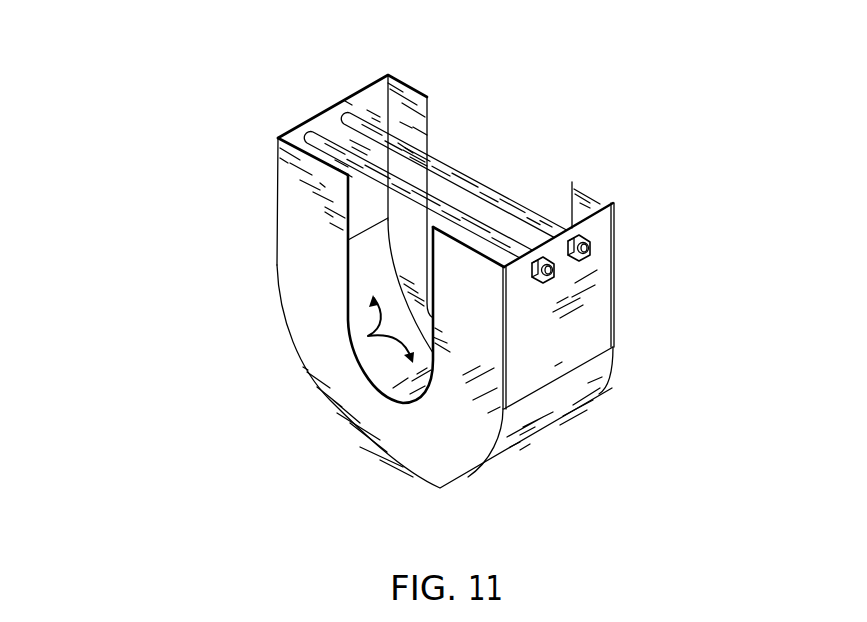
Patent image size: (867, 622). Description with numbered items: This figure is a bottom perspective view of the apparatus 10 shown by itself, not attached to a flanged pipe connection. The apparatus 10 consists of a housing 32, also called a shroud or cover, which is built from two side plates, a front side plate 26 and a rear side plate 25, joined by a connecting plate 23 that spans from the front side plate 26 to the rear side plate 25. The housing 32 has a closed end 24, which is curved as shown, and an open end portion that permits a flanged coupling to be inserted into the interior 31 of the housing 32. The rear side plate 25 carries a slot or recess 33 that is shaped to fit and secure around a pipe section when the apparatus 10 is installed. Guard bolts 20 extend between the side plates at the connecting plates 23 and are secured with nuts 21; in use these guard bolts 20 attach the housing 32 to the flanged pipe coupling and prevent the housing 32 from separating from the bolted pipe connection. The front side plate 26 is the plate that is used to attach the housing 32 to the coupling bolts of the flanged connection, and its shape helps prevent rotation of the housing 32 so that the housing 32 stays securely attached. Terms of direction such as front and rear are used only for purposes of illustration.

The apparatus 10 is at (185, 108).
The guard bolts 20 is at (462, 215).
The nuts 21 is at (587, 232).
The connecting plate 23 is at (597, 270).
The closed end 24 is at (603, 387).
The rear side plate 25 is at (397, 442).
The front side plate 26 is at (423, 104).
The interior 31 is at (357, 336).
The housing 32 is at (348, 97).
The slot or recess 33 is at (365, 249).